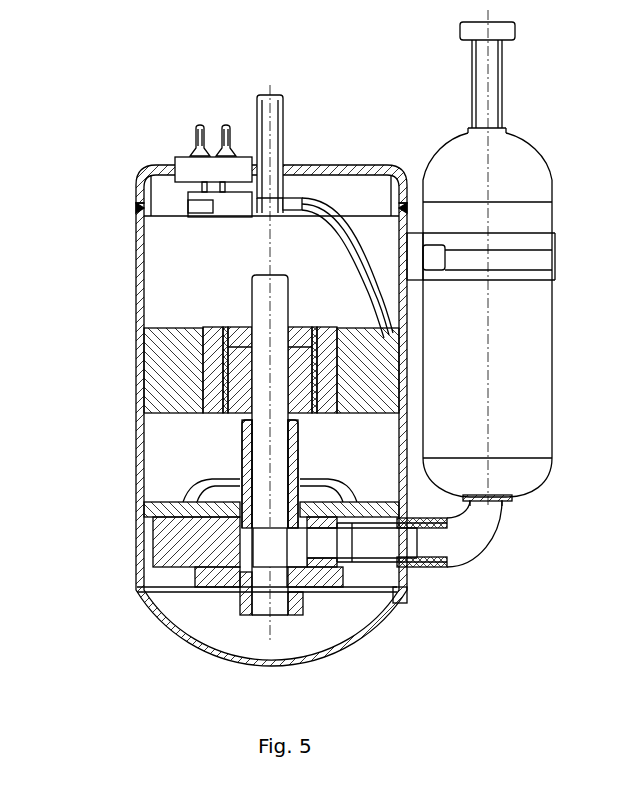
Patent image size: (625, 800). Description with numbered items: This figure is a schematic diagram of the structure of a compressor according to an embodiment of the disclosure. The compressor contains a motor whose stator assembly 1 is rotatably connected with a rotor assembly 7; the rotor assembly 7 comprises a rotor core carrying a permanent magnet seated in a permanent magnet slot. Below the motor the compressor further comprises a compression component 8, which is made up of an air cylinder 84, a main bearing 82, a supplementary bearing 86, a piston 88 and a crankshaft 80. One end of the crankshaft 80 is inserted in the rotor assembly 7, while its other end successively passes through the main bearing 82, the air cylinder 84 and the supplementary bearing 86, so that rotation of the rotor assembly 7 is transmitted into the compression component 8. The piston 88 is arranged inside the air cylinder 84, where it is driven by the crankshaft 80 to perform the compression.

The stator assembly 1 is at (150, 366).
The rotor assembly 7 is at (215, 328).
The compression component 8 is at (262, 524).
The crankshaft 80 is at (268, 438).
The main bearing 82 is at (215, 503).
The air cylinder 84 is at (285, 544).
The supplementary bearing 86 is at (245, 588).
The piston 88 is at (245, 537).